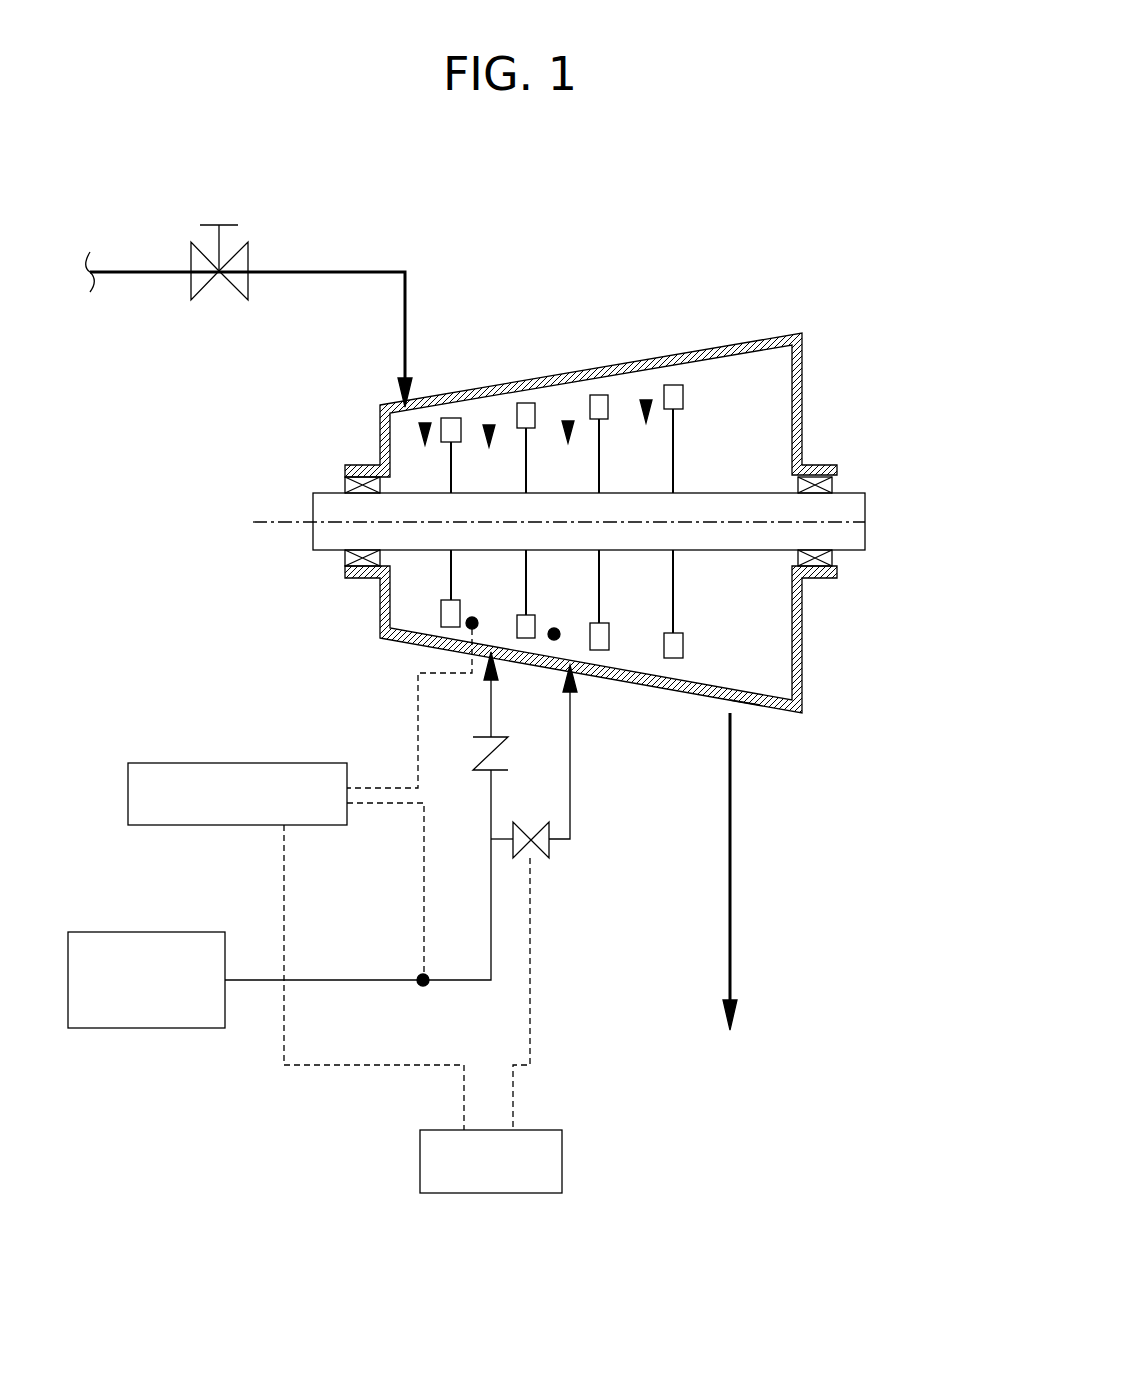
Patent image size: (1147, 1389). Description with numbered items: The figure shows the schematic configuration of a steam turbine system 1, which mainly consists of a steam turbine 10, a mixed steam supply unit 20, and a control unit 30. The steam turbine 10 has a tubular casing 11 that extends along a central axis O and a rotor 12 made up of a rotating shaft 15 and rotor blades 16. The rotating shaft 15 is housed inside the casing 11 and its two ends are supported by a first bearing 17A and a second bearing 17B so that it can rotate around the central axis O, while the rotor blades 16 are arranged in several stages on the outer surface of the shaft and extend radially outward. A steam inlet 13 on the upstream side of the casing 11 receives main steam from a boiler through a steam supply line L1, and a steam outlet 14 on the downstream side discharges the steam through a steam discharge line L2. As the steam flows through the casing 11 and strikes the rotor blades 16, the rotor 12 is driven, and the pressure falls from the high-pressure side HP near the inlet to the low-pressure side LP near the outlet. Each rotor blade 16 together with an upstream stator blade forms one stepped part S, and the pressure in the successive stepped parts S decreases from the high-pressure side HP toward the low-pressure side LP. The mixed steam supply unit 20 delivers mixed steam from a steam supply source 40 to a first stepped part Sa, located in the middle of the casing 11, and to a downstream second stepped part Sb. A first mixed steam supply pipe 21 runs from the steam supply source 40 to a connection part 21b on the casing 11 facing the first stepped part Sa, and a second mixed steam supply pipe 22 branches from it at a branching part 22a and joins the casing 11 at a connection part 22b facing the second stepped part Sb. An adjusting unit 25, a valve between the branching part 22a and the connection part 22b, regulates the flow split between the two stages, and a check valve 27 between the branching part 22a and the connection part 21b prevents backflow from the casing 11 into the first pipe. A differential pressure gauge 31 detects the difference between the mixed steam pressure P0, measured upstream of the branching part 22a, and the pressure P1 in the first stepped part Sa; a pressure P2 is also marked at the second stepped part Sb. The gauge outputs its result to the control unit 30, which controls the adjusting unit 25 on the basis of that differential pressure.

The steam turbine system 1 is at (800, 228).
The steam turbine 10 is at (642, 335).
The casing 11 is at (533, 395).
The rotor 12 is at (589, 538).
The steam inlet 13 is at (418, 400).
The steam outlet 14 is at (740, 706).
The rotating shaft 15 is at (745, 551).
The rotor blade 16 is at (600, 651).
The first bearing 17A is at (340, 487).
The second bearing 17B is at (832, 487).
The mixed steam supply unit 20 is at (457, 901).
The first mixed steam supply pipe 21 is at (366, 901).
The connection part 21b is at (486, 660).
The second mixed steam supply pipe 22 is at (525, 822).
The branching part 22a is at (490, 840).
The connection part 22b is at (560, 668).
The adjusting unit 25 is at (548, 857).
The check valve 27 is at (486, 757).
The control unit 30 is at (562, 1165).
The differential pressure gauge 31 is at (240, 763).
The steam supply source 40 is at (148, 932).
The steam supply line L1 is at (337, 272).
The steam discharge line L2 is at (731, 885).
The high-pressure side HP is at (385, 405).
The low-pressure side LP is at (796, 333).
The stepped part S is at (425, 423).
The first stepped part Sa is at (489, 425).
The second stepped part Sb is at (568, 421).
The central axis O is at (277, 522).
The pressure of the mixed steam P0 is at (424, 1001).
The pressure within the casing in the first stepped part P1 is at (481, 605).
The second stage pressure P2 is at (563, 615).